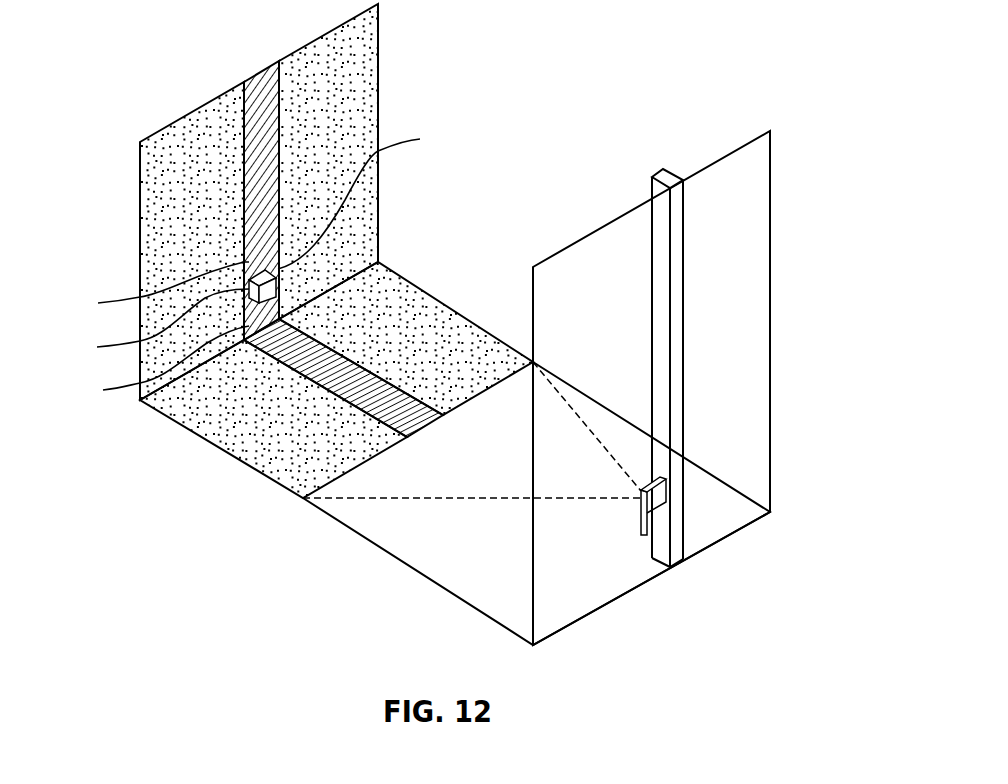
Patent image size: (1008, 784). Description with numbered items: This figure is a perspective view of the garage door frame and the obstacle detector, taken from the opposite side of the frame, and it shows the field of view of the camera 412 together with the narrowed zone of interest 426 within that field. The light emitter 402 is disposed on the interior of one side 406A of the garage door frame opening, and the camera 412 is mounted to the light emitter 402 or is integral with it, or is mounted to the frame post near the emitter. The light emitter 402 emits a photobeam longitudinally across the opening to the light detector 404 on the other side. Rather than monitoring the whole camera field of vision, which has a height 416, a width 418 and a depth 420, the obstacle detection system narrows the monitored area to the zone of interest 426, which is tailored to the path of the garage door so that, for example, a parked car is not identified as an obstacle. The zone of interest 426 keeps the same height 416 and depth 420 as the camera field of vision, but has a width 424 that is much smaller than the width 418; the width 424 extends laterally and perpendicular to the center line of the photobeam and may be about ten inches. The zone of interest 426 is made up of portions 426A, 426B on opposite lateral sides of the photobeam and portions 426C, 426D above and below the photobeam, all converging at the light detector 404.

The width 418 is at (165, 127).
The height 416 is at (378, 120).
The depth 420 is at (468, 319).
The zone of interest 426 is at (345, 372).
The portion 426A is at (138, 326).
The portion 426B is at (382, 195).
The portion 426C is at (138, 291).
The portion 426D is at (140, 366).
The light detector 404 is at (276, 288).
The side 406A is at (677, 297).
The camera 412 is at (657, 498).
The light emitter 402 is at (657, 520).
The width 424 is at (415, 437).